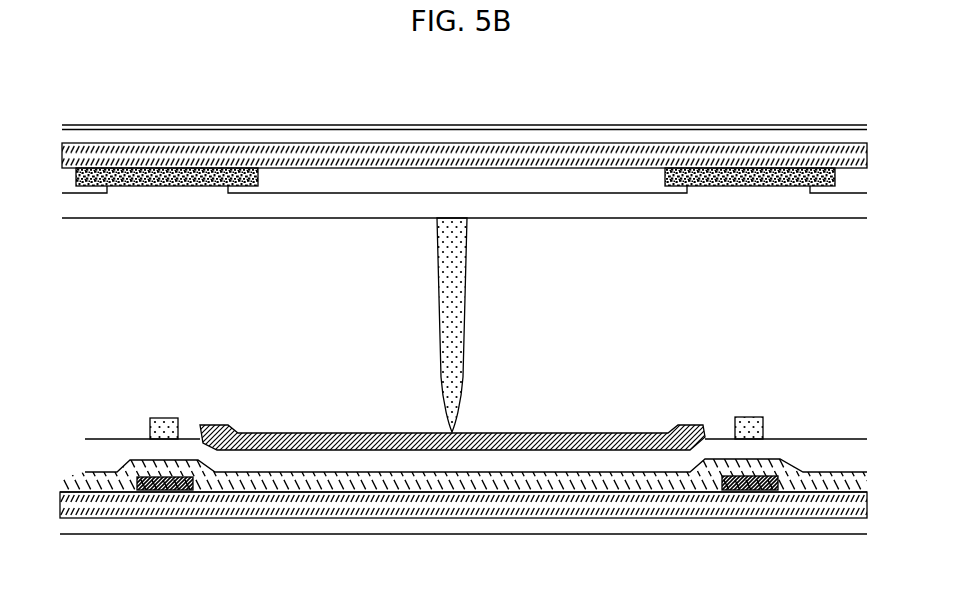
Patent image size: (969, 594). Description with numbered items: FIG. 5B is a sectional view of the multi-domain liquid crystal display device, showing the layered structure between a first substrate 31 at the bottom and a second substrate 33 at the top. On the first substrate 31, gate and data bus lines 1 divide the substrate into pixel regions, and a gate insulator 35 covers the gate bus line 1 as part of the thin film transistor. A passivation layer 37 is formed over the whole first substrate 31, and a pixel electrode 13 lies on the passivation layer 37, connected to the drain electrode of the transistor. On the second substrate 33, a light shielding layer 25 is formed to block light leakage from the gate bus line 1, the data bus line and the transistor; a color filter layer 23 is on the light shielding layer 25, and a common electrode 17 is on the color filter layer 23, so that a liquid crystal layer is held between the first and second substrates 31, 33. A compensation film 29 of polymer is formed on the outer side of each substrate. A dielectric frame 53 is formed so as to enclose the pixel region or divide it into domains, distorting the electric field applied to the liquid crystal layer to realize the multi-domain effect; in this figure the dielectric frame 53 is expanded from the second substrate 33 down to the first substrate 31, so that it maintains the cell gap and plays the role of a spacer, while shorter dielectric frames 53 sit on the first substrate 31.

The gate bus line 1 is at (155, 481).
The pixel electrode 13 is at (497, 440).
The common electrode 17 is at (267, 207).
The color filter layer 23 is at (480, 187).
The light shielding layer 25 is at (195, 186).
The compensation film 29 is at (510, 133).
The first substrate 31 is at (472, 510).
The second substrate 33 is at (400, 157).
The gate insulator 35 is at (365, 506).
The passivation layer 37 is at (318, 465).
The dielectric frame 53 is at (460, 240).